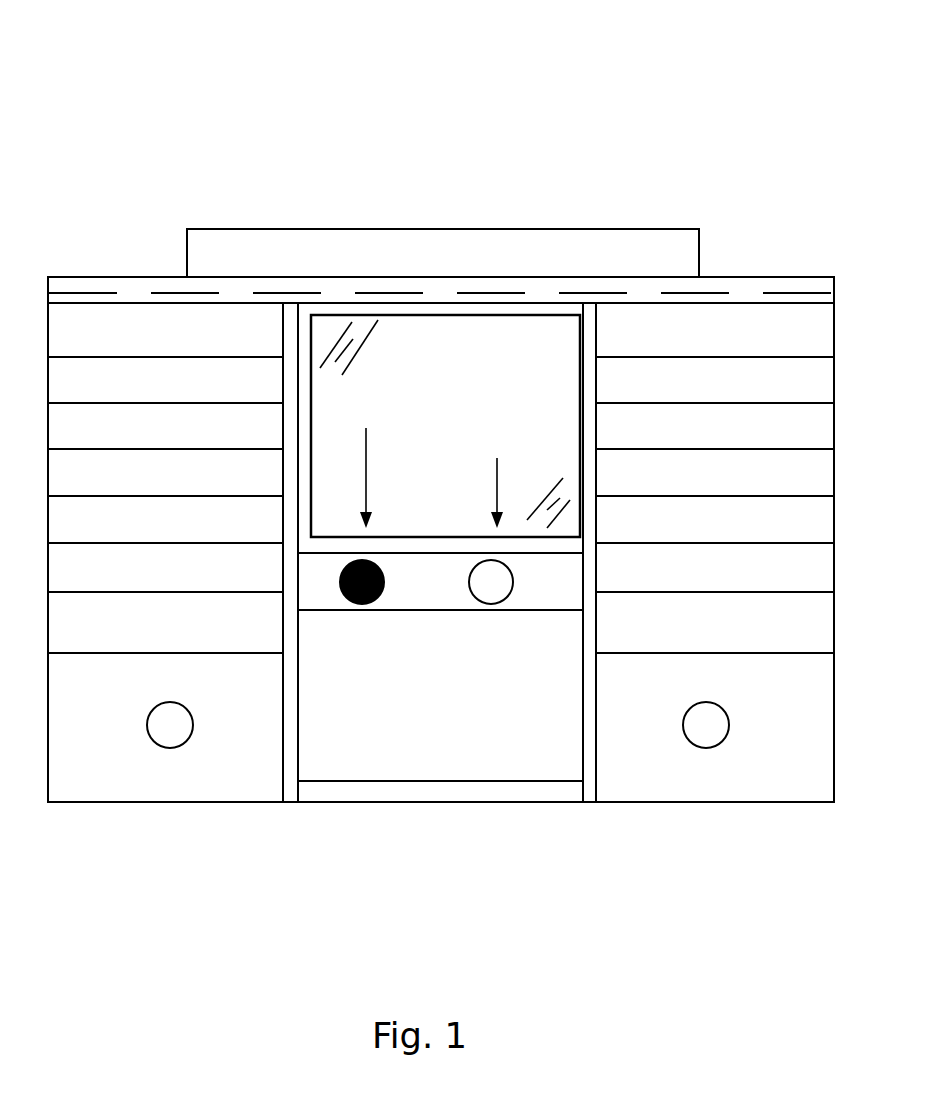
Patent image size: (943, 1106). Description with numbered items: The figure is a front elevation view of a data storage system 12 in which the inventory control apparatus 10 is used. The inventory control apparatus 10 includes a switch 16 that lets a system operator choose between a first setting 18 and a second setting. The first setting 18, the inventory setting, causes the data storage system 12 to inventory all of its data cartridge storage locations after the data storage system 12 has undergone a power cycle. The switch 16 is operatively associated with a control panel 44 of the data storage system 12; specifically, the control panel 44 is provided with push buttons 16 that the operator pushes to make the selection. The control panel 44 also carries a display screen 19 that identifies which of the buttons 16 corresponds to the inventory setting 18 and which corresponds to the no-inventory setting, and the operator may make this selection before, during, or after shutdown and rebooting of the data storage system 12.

The inventory control apparatus 10 is at (240, 62).
The data storage system 12 is at (436, 226).
The display screen 19 is at (443, 315).
The switch 16 is at (426, 639).
The first setting 18 is at (362, 604).
The control panel 44 is at (433, 803).